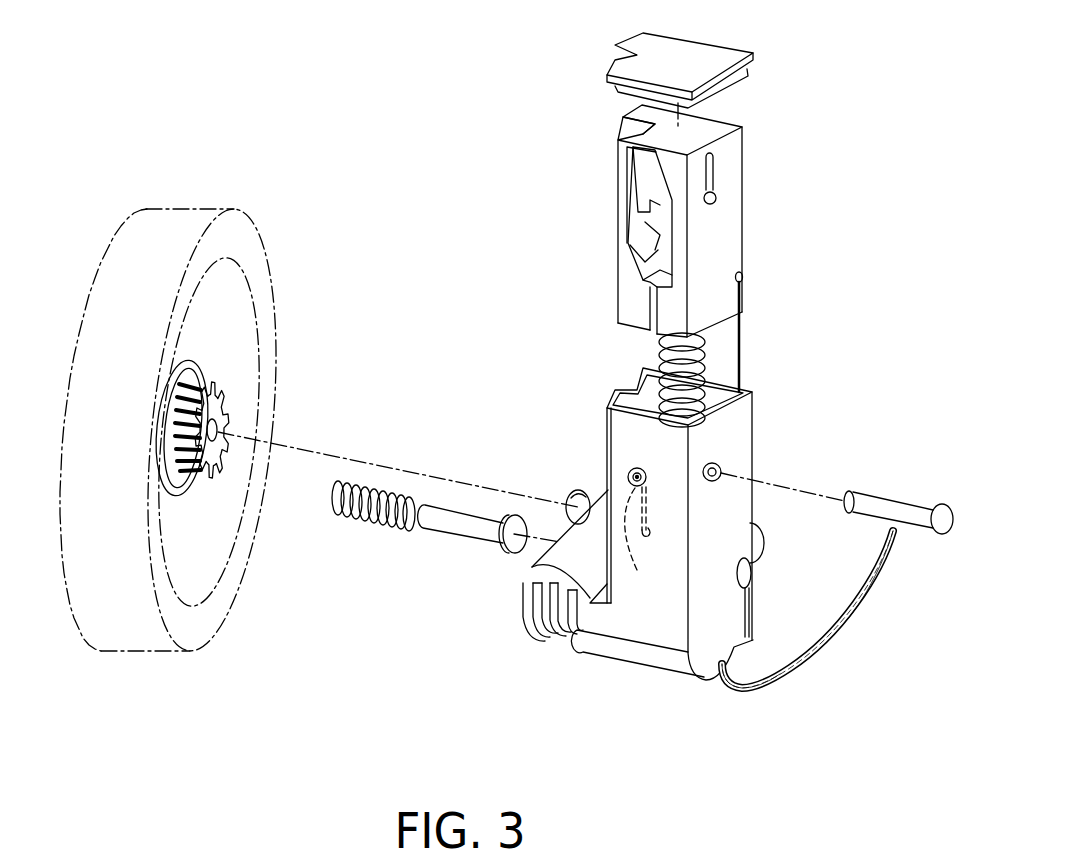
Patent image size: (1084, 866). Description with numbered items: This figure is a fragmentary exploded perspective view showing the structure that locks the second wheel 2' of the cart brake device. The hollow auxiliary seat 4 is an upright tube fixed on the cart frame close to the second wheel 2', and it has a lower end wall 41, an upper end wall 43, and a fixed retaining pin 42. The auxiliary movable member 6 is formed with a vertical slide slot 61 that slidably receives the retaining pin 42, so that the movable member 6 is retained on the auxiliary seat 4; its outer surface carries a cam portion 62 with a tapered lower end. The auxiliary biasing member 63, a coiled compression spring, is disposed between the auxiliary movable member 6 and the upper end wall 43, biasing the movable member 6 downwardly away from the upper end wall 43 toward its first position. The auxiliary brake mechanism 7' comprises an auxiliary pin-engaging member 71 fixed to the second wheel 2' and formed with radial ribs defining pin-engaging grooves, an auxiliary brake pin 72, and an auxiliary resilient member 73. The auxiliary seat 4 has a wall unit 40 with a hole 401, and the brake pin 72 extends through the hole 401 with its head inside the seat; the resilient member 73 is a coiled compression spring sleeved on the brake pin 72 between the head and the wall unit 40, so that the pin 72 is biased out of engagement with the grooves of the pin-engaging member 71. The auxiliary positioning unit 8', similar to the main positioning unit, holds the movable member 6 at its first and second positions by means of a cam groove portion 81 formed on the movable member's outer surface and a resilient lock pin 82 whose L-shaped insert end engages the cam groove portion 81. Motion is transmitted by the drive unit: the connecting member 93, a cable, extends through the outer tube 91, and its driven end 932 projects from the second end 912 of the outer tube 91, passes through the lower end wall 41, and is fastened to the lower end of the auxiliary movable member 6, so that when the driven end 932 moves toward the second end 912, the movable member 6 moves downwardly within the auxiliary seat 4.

The second wheel 2' is at (177, 412).
The auxiliary pin-engaging member 71 is at (209, 383).
The auxiliary brake mechanism 7' is at (442, 469).
The auxiliary brake pin 72 is at (467, 520).
The auxiliary resilient member 73 is at (353, 518).
The auxiliary positioning unit 8' is at (613, 546).
The wall unit 40 is at (573, 550).
The hole 401 is at (578, 490).
The lower end wall 41 is at (633, 663).
The resilient lock pin 82 is at (639, 547).
The auxiliary seat 4 is at (855, 453).
The fixed retaining pin 42 is at (890, 508).
The auxiliary movable member 6 is at (749, 200).
The slide slot 61 is at (714, 173).
The cam portion 62 is at (627, 125).
The cam groove portion 81 is at (642, 190).
The upper end wall 43 is at (643, 38).
The auxiliary biasing member 63 is at (660, 355).
The driven end 932 is at (743, 292).
The outer tube 91 is at (828, 640).
The connecting member 93 is at (853, 606).
The second end 912 is at (742, 692).